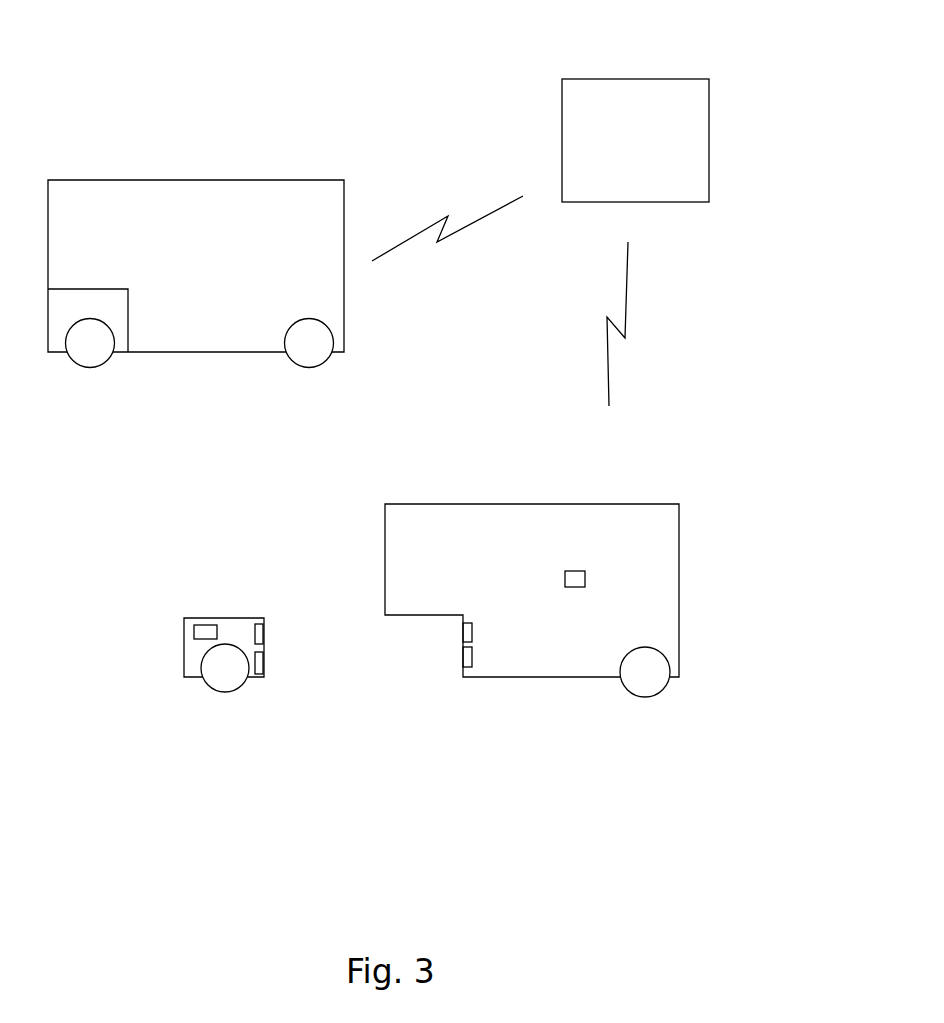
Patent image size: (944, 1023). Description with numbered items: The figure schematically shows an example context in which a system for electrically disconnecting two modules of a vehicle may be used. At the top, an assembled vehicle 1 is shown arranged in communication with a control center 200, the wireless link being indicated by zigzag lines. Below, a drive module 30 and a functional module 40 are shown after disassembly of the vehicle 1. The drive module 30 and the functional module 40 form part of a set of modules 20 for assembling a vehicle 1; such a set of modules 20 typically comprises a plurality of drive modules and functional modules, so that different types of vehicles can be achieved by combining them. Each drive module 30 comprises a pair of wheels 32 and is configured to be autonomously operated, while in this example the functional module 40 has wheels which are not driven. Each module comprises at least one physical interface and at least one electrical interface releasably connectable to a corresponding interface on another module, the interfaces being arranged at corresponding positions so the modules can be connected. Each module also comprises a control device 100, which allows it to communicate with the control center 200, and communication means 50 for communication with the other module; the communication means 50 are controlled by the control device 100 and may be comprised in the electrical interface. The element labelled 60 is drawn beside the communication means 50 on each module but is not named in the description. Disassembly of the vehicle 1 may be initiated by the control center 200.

The vehicle 1 is at (196, 274).
The control center 200 is at (635, 140).
The set of modules 20 is at (450, 768).
The drive module 30 is at (232, 618).
The wheels 32 is at (248, 685).
The functional module 40 is at (679, 610).
The communication means 50 is at (268, 631).
The second connector 60 is at (268, 657).
The control device 100 is at (183, 635).